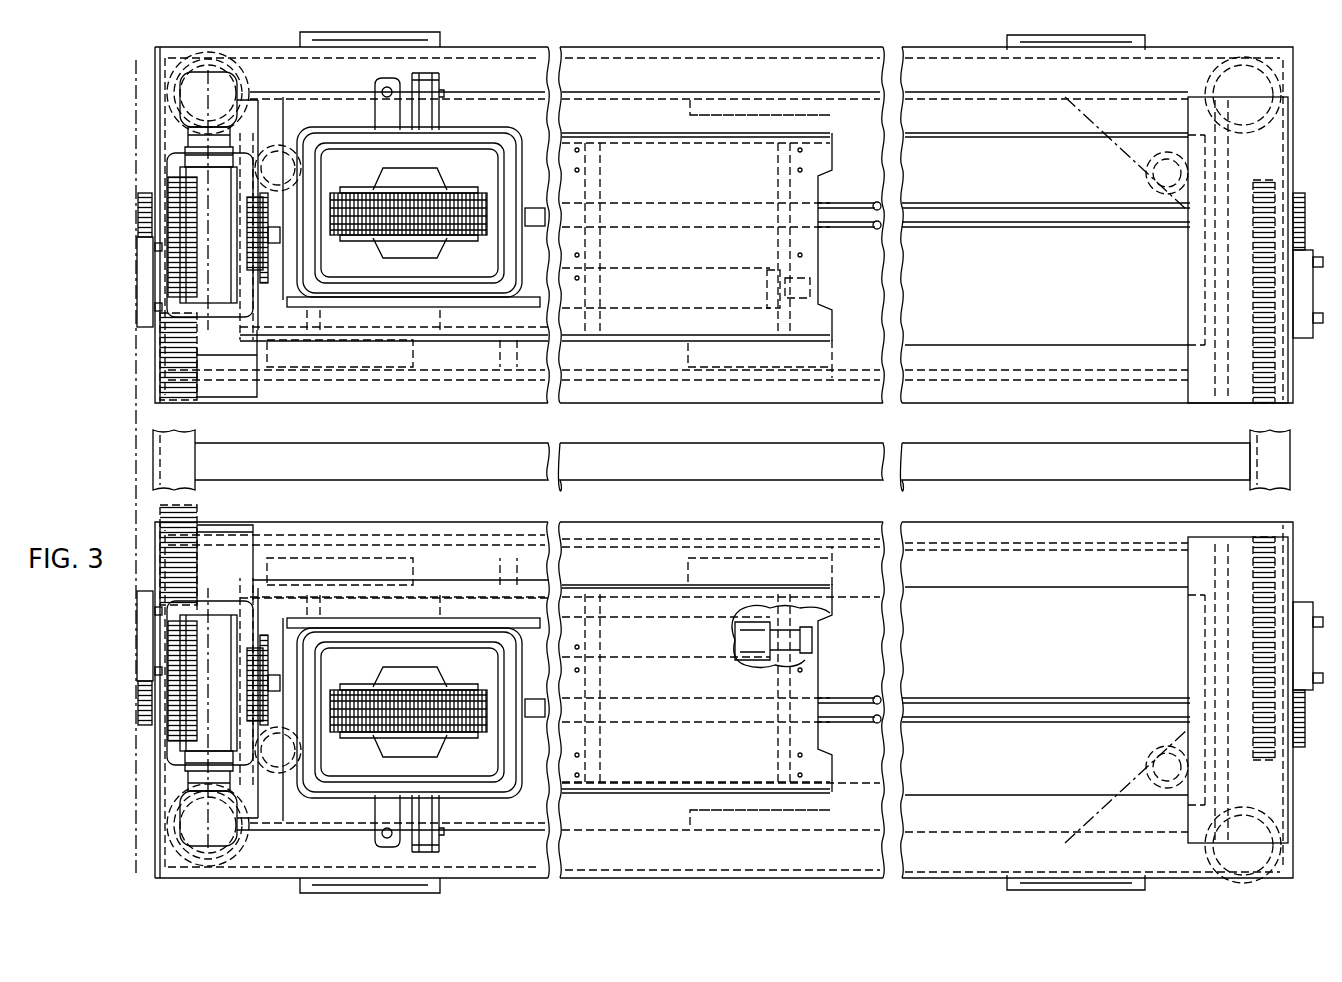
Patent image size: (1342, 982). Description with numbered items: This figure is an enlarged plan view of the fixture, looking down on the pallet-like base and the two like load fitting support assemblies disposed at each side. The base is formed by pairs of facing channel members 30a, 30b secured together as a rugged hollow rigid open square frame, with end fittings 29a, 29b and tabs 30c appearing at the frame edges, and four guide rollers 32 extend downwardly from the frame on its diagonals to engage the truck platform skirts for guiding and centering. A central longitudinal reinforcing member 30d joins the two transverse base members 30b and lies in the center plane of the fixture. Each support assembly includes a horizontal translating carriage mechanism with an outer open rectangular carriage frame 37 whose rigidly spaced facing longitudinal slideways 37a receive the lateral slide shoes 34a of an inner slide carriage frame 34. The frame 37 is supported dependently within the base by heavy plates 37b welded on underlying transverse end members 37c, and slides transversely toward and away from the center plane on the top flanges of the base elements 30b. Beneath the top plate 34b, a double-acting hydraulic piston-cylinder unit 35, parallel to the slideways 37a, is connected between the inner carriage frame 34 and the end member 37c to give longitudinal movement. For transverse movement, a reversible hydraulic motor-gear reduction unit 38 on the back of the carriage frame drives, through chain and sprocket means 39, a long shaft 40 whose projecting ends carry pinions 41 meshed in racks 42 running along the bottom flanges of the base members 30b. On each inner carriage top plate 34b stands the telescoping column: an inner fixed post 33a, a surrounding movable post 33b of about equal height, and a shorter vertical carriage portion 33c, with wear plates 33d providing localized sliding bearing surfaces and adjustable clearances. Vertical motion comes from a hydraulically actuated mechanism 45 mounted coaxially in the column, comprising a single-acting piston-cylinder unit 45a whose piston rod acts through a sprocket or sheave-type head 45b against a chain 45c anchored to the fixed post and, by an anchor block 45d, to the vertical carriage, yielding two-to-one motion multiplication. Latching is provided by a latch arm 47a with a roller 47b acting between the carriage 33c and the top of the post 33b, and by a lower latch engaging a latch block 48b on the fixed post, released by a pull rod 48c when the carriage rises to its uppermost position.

The connector block 29a is at (1308, 247).
The connector block 29b is at (137, 250).
The channel member 30a is at (778, 42).
The channel member 30b is at (152, 466).
The housing tab 30c is at (440, 38).
The central longitudinal reinforcing member 30d is at (675, 482).
The guide roller 32 is at (1147, 180).
The fixed post 33a is at (478, 300).
The movable post 33b is at (538, 303).
The vertical carriage portion 33c is at (543, 267).
The wear plate 33d is at (308, 282).
The slide carriage frame 34 is at (822, 192).
The lateral slide shoe 34a is at (808, 120).
The top plate 34b is at (709, 458).
The double-acting hydraulic piston-cylinder unit 35 is at (735, 278).
The outer carriage frame 37 is at (1095, 411).
The longitudinal slideway 37a is at (978, 150).
The heavy plate 37b is at (195, 379).
The transverse end member 37c is at (195, 352).
The reversible hydraulic motor-gear reduction unit 38 is at (210, 85).
The chain and sprocket means 39 is at (268, 182).
The long shaft 40 is at (1038, 228).
The pinion 41 is at (168, 173).
The rack 42 is at (160, 410).
The hydraulically actuated mechanism 45 is at (471, 158).
The single-acting piston-cylinder unit 45a is at (543, 150).
The sprocket or sheave-type head 45b is at (543, 185).
The chain 45c is at (533, 185).
The anchor block 45d is at (533, 230).
The latch arm 47a is at (440, 80).
The roller 47b is at (395, 72).
The latch block 48b is at (377, 105).
The pull rod 48c is at (380, 90).